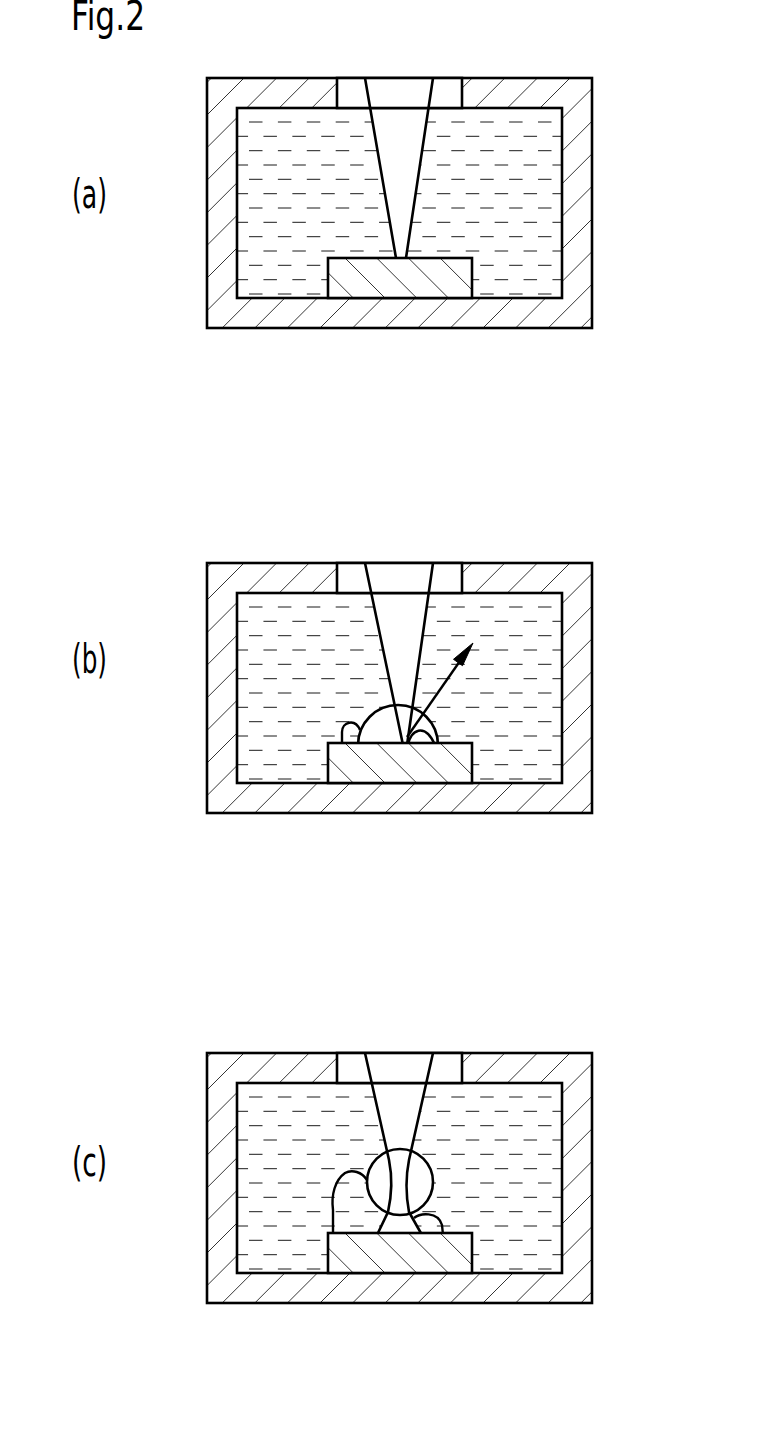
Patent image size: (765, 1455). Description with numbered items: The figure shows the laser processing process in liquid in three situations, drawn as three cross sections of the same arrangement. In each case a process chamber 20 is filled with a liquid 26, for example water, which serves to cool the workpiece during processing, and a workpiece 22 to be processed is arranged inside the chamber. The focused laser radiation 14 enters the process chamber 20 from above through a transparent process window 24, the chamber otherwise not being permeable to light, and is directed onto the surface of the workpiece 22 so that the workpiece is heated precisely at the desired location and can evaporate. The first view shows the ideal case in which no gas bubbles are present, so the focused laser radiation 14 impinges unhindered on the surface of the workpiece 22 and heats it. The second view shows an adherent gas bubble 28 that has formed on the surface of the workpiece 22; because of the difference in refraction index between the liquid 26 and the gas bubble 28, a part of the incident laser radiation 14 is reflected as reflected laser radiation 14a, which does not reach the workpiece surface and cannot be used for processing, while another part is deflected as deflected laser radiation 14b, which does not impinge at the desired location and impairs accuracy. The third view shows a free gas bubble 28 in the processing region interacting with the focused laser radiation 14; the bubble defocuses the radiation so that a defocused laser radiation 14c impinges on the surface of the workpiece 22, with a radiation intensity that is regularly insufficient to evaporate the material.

The laser radiation 14 is at (399, 89).
The reflected laser radiation 14a is at (443, 677).
The deflected laser radiation 14b is at (427, 747).
The defocused laser radiation 14c is at (443, 1235).
The process chamber 20 is at (515, 78).
The workpiece 22 is at (368, 282).
The transparent process window 24 is at (351, 78).
The liquid 26 is at (538, 207).
The gas bubble 28 is at (337, 745).